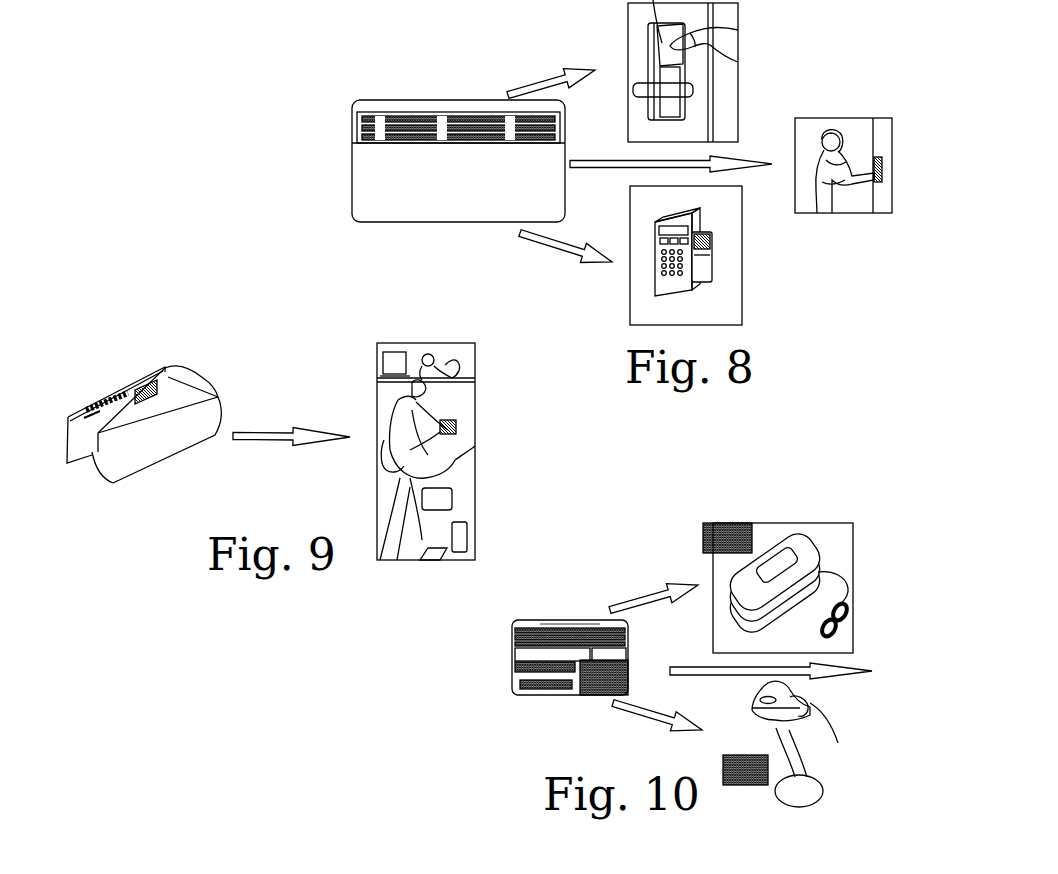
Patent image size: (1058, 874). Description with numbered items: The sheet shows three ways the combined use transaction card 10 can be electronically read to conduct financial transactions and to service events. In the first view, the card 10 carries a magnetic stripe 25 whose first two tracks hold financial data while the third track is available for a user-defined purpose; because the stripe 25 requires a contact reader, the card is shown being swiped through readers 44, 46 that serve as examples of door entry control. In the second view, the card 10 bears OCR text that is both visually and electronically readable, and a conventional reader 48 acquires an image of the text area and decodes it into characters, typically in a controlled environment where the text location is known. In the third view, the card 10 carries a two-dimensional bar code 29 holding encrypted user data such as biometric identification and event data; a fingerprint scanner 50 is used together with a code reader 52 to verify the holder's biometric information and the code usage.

In FIG. 9, the combined use transaction card 10 is at (70, 445).
In FIG. 10, the combined use transaction card 10 is at (537, 621).
In FIG. 8, the magnetic stripe 25 is at (357, 125).
In FIG. 10, the two-dimensional bar code 29 is at (590, 697).
In FIG. 8, the reader 44 is at (671, 285).
In FIG. 8, the reader 46 is at (883, 170).
In FIG. 9, the conventional reader 48 is at (158, 458).
In FIG. 10, the fingerprint scanner 50 is at (787, 540).
In FIG. 10, the code reader 52 is at (803, 752).